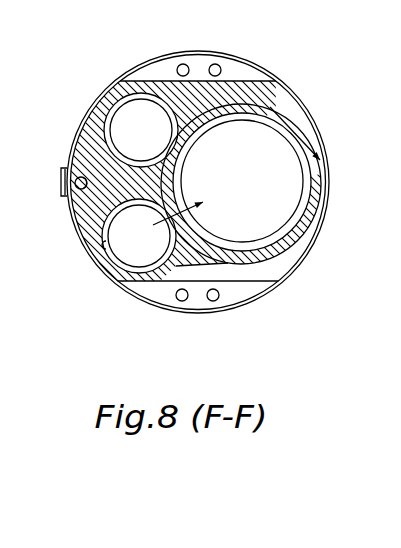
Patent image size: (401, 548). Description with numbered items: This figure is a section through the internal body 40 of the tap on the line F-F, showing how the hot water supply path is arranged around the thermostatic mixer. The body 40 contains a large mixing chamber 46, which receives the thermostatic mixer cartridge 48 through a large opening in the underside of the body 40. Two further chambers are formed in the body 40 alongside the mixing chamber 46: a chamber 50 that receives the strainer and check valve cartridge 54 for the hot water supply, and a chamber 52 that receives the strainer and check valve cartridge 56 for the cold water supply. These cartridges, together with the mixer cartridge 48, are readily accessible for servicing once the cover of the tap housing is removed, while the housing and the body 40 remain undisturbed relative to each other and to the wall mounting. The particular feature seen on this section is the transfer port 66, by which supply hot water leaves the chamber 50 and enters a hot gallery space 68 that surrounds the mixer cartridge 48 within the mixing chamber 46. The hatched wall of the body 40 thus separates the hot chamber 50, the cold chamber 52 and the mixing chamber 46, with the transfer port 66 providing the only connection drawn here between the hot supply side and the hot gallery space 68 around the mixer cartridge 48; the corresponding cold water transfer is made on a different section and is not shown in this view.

The body 40 is at (271, 90).
The mixing chamber 46 is at (233, 188).
The mixer cartridge 48 is at (302, 178).
The chamber 50 is at (128, 256).
The chamber 52 is at (130, 108).
The strainer and check valve cartridge 54 is at (108, 248).
The strainer and check valve cartridge 56 is at (105, 96).
The transfer port 66 is at (184, 254).
The hot gallery space 68 is at (283, 240).